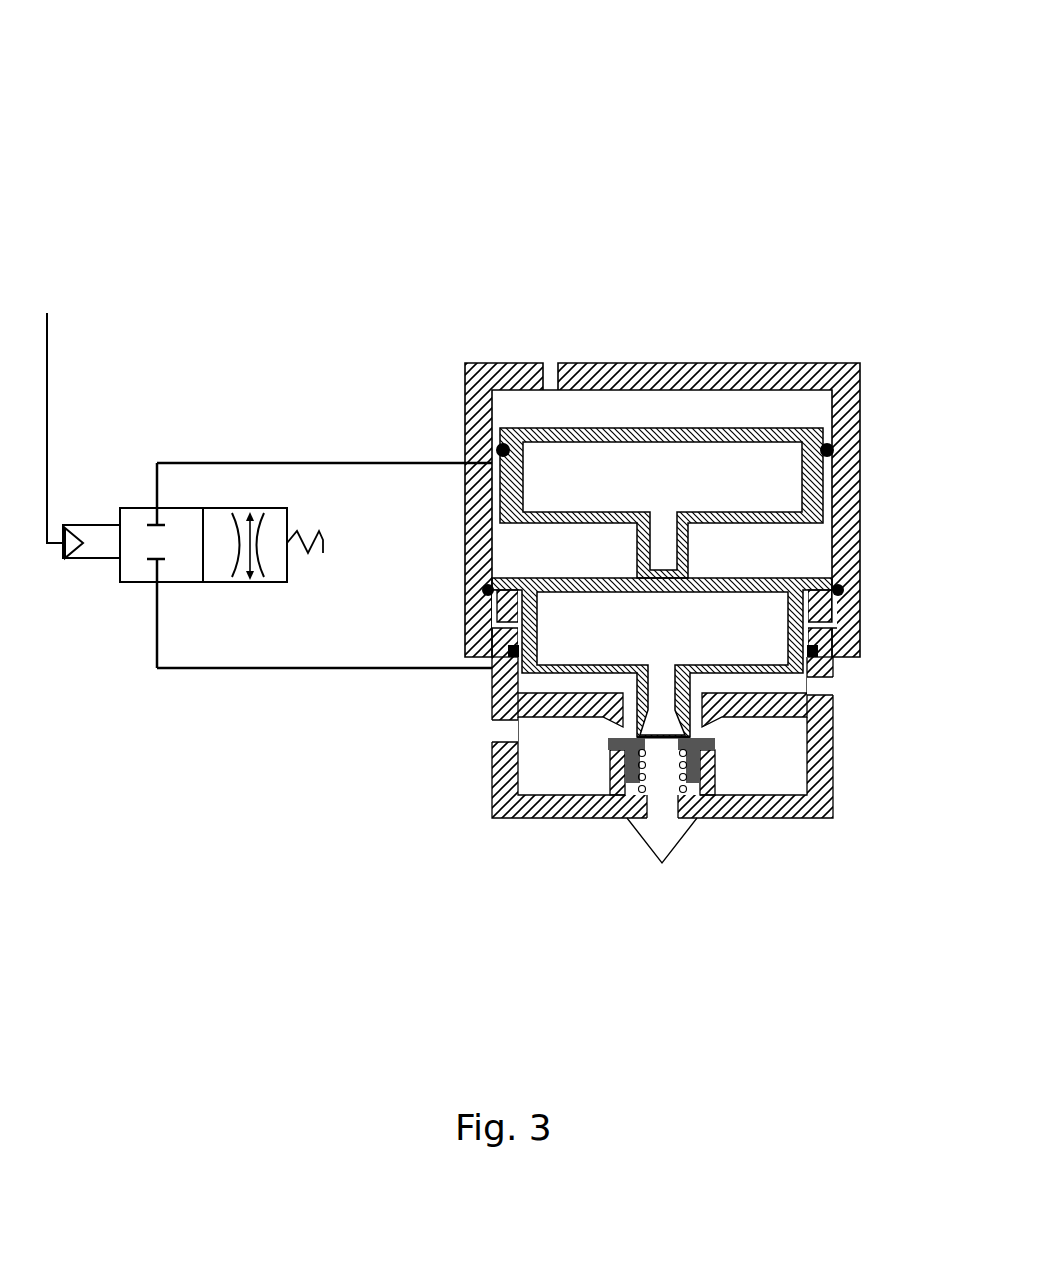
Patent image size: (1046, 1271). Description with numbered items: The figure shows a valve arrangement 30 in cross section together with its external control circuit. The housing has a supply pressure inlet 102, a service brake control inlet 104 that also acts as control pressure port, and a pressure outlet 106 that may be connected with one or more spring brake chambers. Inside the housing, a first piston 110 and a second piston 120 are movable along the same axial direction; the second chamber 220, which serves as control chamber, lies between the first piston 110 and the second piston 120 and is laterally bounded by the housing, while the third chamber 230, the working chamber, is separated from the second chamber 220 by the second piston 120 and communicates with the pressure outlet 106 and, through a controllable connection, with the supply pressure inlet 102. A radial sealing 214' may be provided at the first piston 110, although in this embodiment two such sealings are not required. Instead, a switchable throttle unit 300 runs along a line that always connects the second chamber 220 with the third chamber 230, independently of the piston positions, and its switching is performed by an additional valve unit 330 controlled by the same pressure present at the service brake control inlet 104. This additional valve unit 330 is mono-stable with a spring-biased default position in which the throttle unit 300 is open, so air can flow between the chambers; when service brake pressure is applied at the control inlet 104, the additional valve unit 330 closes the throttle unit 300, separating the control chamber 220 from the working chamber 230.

The valve arrangement 30 is at (370, 66).
The supply pressure inlet 102 is at (493, 727).
The service brake control inlet 104 is at (57, 357).
The pressure outlet 106 is at (833, 677).
The first piston 110 is at (653, 435).
The second piston 120 is at (468, 575).
The radial sealing 214' is at (617, 509).
The second chamber 220 is at (498, 538).
The third chamber 230 is at (492, 683).
The switchable throttle unit 300 is at (235, 570).
The additional valve unit 330 is at (218, 508).